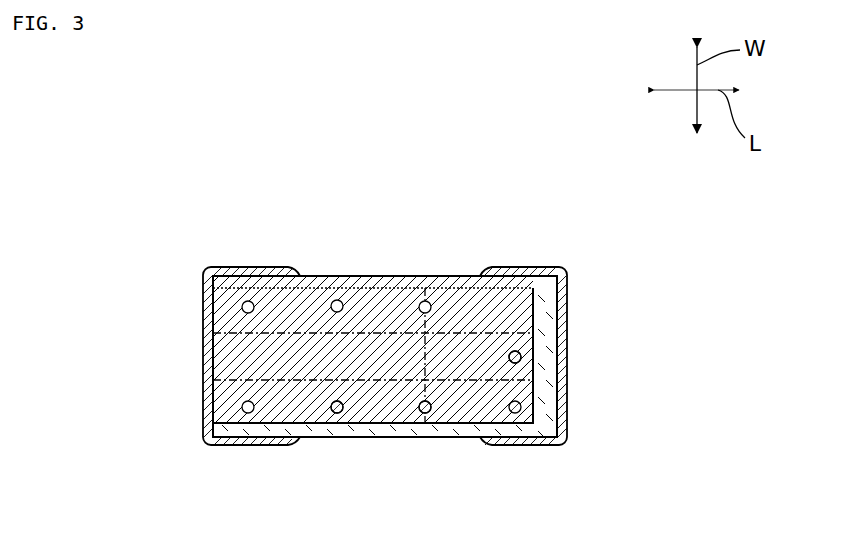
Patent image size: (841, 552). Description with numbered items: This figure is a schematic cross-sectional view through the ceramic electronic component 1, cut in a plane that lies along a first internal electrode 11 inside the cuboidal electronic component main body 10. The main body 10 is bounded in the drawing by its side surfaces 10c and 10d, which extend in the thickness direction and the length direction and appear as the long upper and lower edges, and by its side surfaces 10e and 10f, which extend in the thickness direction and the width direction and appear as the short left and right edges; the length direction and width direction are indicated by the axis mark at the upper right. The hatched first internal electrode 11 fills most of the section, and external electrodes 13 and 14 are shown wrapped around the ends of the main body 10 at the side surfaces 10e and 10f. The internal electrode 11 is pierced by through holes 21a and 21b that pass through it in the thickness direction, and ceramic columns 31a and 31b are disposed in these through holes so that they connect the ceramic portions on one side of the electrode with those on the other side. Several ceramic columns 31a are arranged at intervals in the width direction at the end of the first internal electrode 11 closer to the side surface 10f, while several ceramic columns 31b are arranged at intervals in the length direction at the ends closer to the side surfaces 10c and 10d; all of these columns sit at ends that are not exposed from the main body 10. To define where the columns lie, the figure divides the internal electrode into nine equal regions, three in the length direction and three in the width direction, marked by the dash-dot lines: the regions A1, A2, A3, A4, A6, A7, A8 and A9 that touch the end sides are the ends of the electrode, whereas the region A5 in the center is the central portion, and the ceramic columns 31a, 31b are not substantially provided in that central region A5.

The ceramic electronic component 1 is at (498, 243).
The electronic component main body 10 is at (412, 272).
The side surface 10c is at (334, 275).
The side surface 10d is at (410, 437).
The side surface 10e is at (212, 340).
The side surface 10f is at (558, 303).
The first internal electrode 11 is at (487, 427).
The first external electrode 13 is at (205, 400).
The second external electrode 14 is at (567, 428).
The through hole 21a is at (520, 354).
The through hole 21b is at (420, 411).
The ceramic column 31a is at (520, 408).
The ceramic column 31b is at (333, 411).
The region A1 is at (244, 302).
The region A2 is at (332, 301).
The region A3 is at (429, 303).
The region A4 is at (213, 355).
The region A5 is at (328, 366).
The region A6 is at (533, 380).
The region A7 is at (243, 410).
The region A8 is at (333, 412).
The region A9 is at (431, 409).